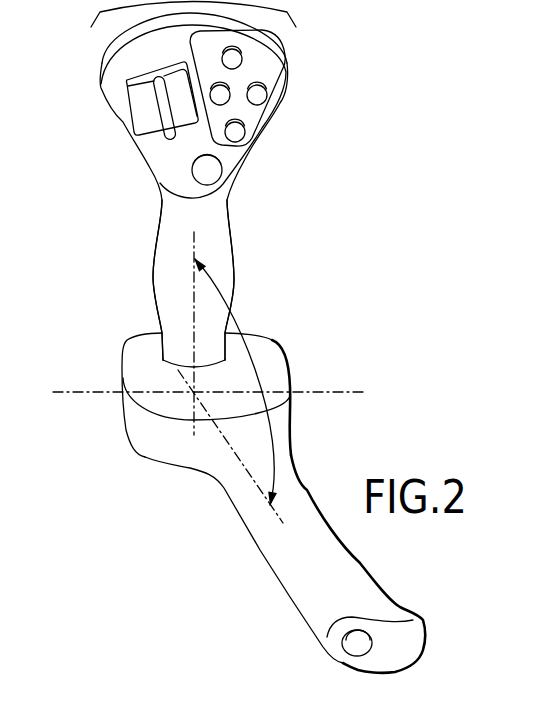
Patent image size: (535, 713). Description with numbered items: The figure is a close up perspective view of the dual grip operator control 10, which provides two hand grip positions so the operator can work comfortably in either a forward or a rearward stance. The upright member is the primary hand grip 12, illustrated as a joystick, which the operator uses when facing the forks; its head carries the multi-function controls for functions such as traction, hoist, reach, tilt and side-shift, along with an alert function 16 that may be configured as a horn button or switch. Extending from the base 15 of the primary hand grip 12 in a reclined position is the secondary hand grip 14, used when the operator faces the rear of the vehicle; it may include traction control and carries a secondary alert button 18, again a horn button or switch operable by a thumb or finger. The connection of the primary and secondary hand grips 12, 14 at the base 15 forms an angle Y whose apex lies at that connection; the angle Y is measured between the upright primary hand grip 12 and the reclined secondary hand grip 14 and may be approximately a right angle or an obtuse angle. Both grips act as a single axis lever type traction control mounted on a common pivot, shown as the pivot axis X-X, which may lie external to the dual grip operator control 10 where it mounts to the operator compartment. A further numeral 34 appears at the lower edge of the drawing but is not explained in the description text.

The dual grip operator control 10 is at (349, 248).
The primary hand grip 12 is at (152, 273).
The secondary hand grip 14 is at (275, 573).
The base 15 is at (122, 425).
The alert function 16 is at (213, 173).
The secondary alert button 18 is at (357, 653).
The pivot 34 is at (164, 705).
The pivot axis X- X is at (208, 394).
The angle Y is at (240, 320).